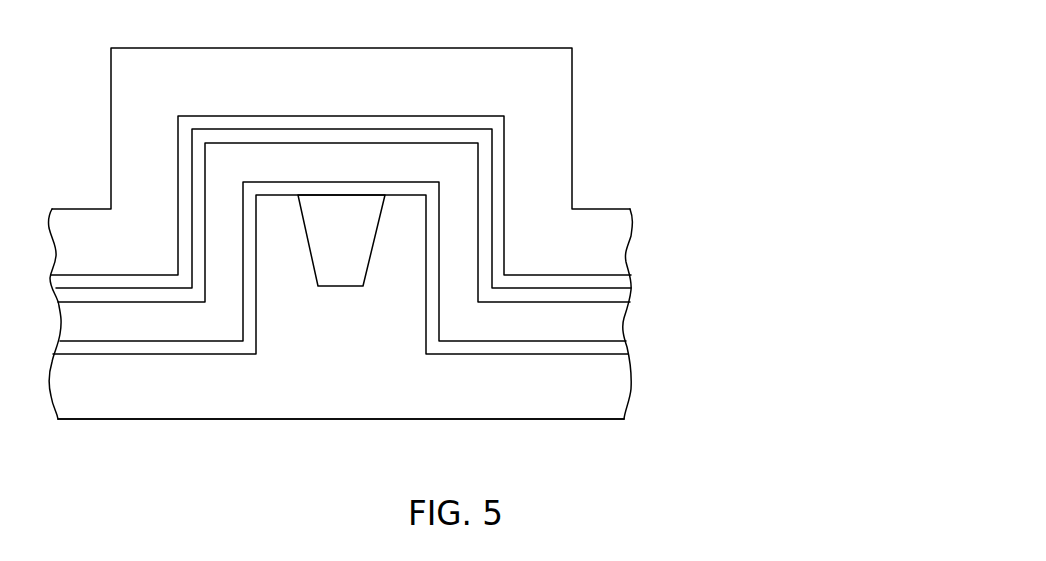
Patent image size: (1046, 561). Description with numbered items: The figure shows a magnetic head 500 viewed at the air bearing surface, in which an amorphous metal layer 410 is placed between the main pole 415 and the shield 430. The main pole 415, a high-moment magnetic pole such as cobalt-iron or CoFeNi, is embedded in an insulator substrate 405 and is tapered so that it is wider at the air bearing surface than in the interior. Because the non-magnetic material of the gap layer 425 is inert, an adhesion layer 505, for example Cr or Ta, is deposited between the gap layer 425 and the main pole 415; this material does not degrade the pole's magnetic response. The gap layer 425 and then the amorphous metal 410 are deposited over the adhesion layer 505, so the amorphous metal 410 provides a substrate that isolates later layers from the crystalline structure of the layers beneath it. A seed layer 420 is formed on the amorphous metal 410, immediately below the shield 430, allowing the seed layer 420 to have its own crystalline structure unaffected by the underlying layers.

The magnetic head 500 is at (463, 247).
The shield 430 is at (632, 232).
The seed layer 420 is at (631, 283).
The amorphous metal layer 410 is at (630, 296).
The gap layer 425 is at (624, 322).
The adhesion layer 505 is at (626, 345).
The insulator substrate 405 is at (631, 387).
The main pole 415 is at (340, 287).